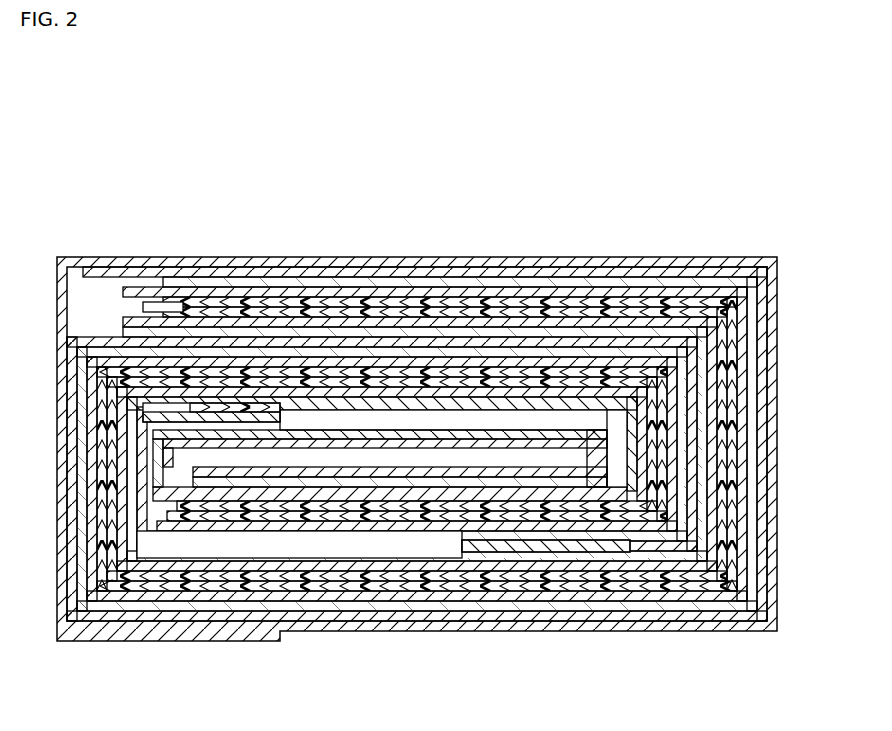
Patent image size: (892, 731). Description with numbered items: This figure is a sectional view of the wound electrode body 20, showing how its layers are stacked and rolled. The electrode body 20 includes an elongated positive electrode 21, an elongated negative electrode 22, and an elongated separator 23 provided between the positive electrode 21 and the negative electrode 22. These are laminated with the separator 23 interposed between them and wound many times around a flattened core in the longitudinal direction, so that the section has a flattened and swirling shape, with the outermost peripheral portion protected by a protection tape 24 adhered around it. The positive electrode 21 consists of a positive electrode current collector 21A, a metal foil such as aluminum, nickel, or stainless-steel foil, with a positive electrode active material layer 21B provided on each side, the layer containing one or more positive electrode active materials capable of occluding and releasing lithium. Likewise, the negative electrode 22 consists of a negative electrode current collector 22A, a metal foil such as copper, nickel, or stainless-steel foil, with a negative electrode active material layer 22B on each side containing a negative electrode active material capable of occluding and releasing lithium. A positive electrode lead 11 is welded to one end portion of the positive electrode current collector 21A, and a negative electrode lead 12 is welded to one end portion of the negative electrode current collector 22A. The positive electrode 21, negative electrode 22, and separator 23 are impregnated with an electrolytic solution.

The electrode body 20 is at (668, 128).
The positive electrode 21 is at (255, 192).
The positive electrode current collector 21A is at (150, 302).
The positive electrode active material layer 21B is at (246, 318).
The negative electrode 22 is at (295, 192).
The negative electrode current collector 22A is at (318, 276).
The negative electrode active material layer 22B is at (430, 335).
The separator 23 is at (612, 290).
The protection tape 24 is at (755, 262).
The positive electrode lead 11 is at (230, 422).
The negative electrode lead 12 is at (543, 552).